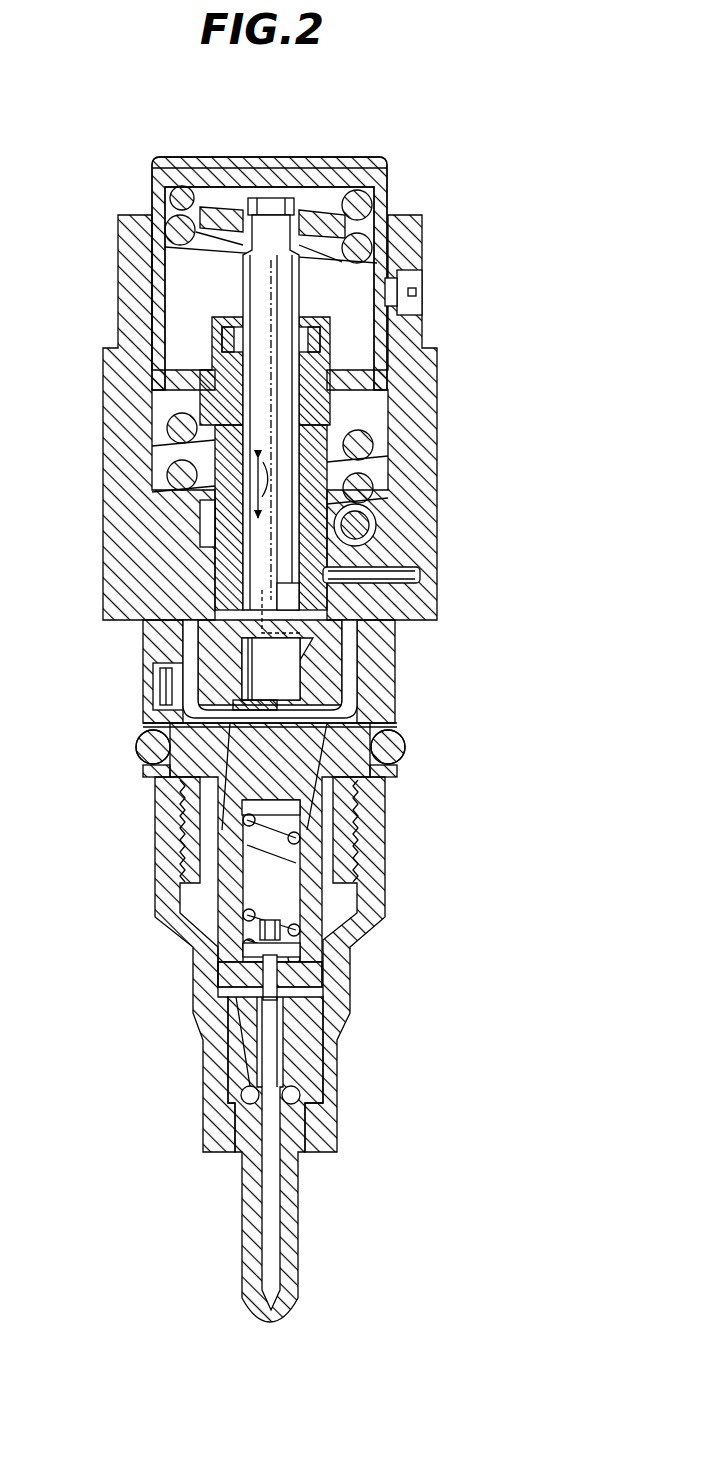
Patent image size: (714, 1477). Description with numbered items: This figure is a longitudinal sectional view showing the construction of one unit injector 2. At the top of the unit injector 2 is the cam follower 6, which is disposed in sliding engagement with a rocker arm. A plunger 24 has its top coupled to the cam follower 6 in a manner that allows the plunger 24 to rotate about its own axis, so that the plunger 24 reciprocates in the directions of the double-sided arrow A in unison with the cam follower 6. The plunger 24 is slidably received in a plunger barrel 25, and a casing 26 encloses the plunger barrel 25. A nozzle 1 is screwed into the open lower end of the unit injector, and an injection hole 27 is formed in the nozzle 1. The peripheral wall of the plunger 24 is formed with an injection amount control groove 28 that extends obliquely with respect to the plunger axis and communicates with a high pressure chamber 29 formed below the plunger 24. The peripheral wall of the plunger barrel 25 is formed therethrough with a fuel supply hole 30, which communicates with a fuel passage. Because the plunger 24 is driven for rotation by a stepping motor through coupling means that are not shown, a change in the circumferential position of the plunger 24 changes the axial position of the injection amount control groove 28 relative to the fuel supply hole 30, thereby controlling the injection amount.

The unit injector 2 is at (482, 134).
The cam follower 6 is at (272, 157).
The casing 26 is at (437, 403).
The plunger 24 is at (368, 522).
The injection amount control groove 28 is at (292, 605).
The fuel supply hole 30 is at (345, 645).
The plunger barrel 25 is at (330, 687).
The high pressure chamber 29 is at (253, 658).
The nozzle 1 is at (338, 1130).
The injection hole 27 is at (272, 1322).